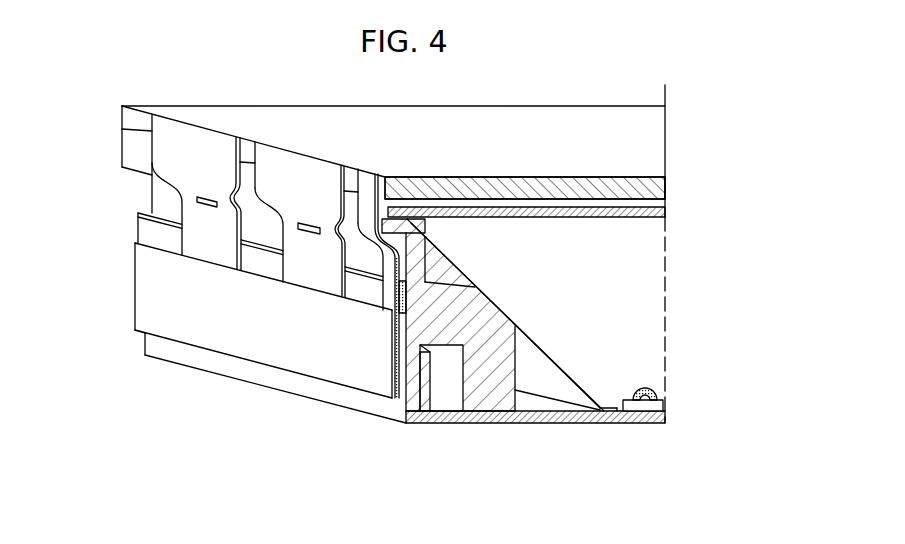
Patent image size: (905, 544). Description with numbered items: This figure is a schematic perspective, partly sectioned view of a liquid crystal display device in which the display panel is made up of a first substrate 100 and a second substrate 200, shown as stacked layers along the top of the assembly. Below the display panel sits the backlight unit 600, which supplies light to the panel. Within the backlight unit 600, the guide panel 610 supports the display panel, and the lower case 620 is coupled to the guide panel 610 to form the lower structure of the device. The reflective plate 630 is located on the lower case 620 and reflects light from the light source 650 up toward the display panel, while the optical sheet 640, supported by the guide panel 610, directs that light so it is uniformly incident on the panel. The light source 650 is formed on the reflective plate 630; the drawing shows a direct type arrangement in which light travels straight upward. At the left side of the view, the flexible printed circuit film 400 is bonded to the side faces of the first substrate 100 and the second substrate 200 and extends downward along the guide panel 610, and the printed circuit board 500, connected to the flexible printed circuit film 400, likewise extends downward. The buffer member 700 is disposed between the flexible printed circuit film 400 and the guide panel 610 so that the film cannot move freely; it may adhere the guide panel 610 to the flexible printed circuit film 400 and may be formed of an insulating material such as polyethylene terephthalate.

The first substrate 100 is at (662, 187).
The second substrate 200 is at (525, 188).
The flexible printed circuit film 400 is at (162, 150).
The printed circuit board 500 is at (150, 292).
The backlight unit 600 is at (523, 361).
The guide panel 610 is at (475, 400).
The lower case 620 is at (607, 423).
The reflective plate 630 is at (545, 354).
The optical sheet 640 is at (603, 217).
The light source 650 is at (643, 432).
The buffer member 700 is at (399, 288).